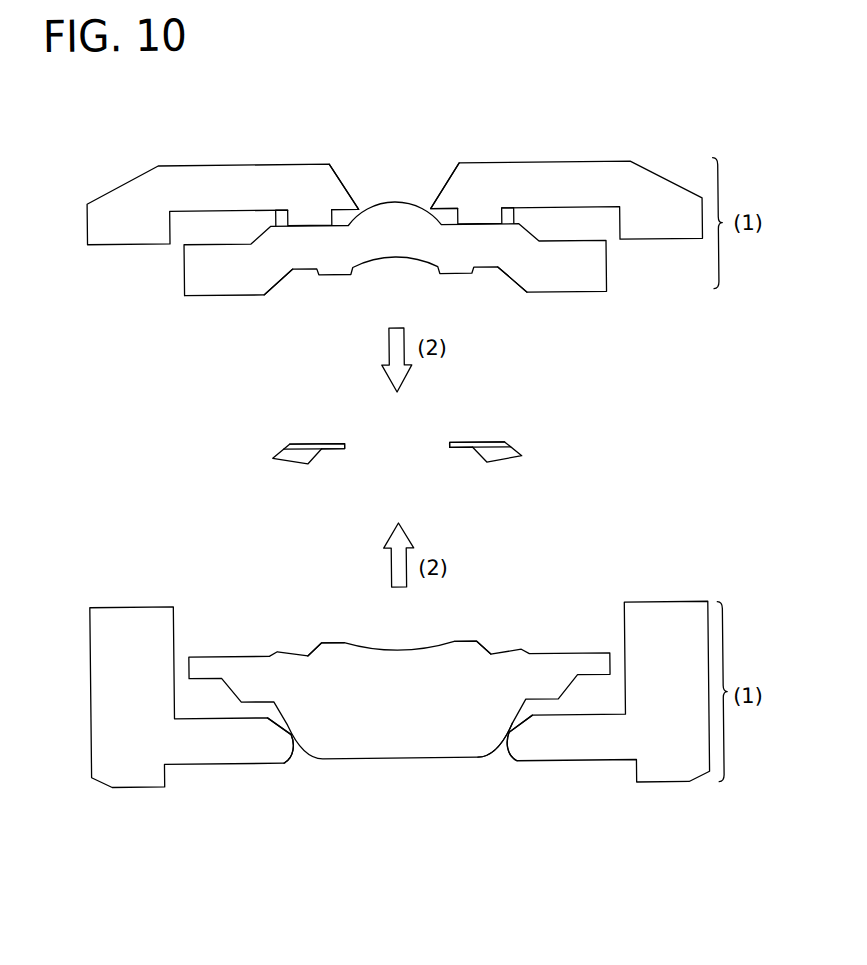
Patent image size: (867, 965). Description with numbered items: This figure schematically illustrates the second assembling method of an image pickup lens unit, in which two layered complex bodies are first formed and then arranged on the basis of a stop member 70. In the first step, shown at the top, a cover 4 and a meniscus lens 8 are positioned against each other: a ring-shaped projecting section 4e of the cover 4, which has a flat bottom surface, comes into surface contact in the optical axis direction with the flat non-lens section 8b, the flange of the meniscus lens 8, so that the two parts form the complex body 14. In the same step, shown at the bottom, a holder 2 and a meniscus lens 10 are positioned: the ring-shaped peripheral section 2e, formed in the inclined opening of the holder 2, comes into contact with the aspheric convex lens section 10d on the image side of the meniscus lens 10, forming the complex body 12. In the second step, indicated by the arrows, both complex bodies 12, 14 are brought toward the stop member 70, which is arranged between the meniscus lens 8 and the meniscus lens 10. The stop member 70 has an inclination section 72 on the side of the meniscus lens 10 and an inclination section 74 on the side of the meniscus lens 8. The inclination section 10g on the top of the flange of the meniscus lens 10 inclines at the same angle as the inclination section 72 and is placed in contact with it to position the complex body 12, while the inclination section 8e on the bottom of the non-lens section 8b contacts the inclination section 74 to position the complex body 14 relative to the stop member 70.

The holder 2 is at (122, 770).
The peripheral section 2e is at (287, 732).
The cover 4 is at (205, 191).
The projecting section 4e is at (314, 219).
The meniscus lens 8 is at (396, 217).
The non-lens section 8b is at (280, 219).
The inclination section 8e is at (279, 286).
The meniscus lens 10 is at (389, 747).
The convex lens section 10d is at (452, 761).
The inclination section 10g is at (311, 647).
The complex body 12 is at (739, 691).
The complex body 14 is at (737, 222).
The stop member 70 is at (293, 454).
The inclination section 72 is at (320, 449).
The inclination section 74 is at (290, 442).